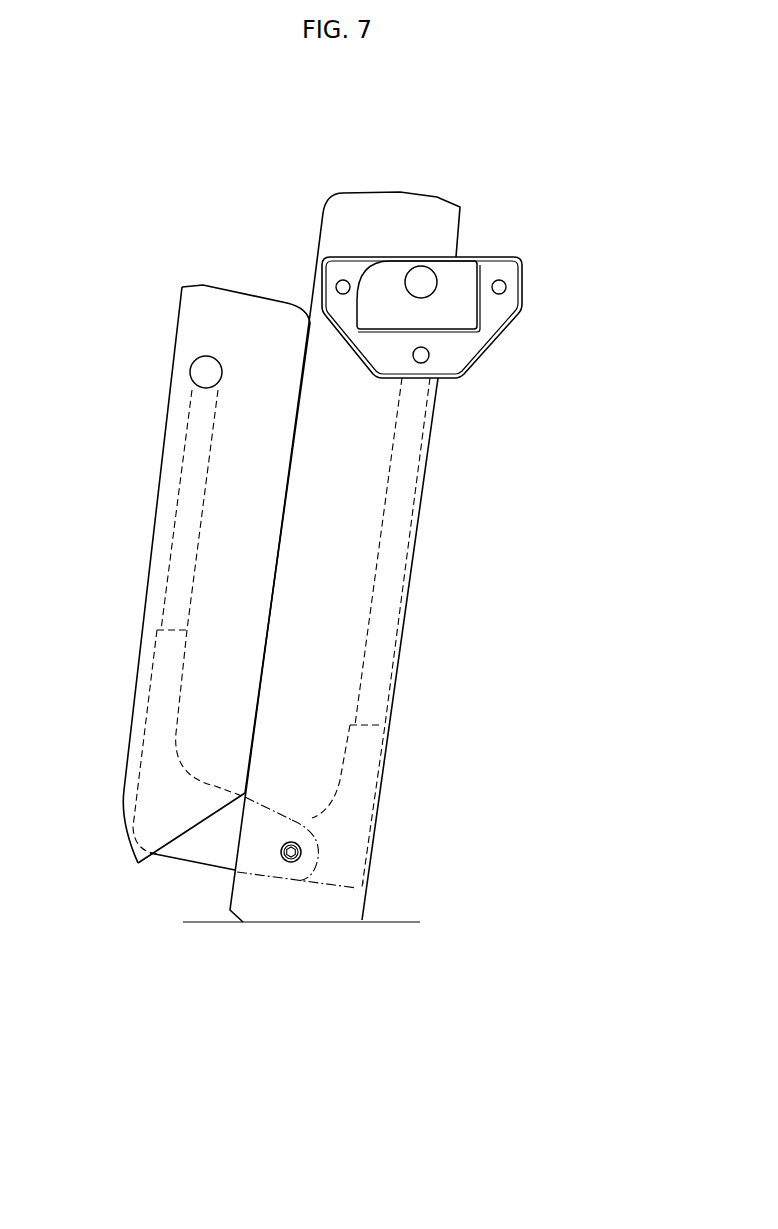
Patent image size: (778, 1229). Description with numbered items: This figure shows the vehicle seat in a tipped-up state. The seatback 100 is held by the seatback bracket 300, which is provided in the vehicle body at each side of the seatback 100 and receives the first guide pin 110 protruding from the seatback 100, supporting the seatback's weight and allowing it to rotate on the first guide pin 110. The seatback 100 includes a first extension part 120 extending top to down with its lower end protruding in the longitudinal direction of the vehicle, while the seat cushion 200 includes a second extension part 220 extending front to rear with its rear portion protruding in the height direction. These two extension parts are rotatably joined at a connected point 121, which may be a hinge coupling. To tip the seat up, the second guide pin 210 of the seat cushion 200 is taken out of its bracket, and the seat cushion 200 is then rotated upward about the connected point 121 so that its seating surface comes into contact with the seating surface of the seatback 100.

The seatback 100 is at (438, 193).
The first guide pin 110 is at (429, 355).
The first extension part 120 is at (340, 810).
The connected point 121 is at (284, 863).
The seat cushion 200 is at (213, 283).
The second guide pin 210 is at (205, 372).
The second extension part 220 is at (187, 843).
The seatback bracket 300 is at (475, 303).